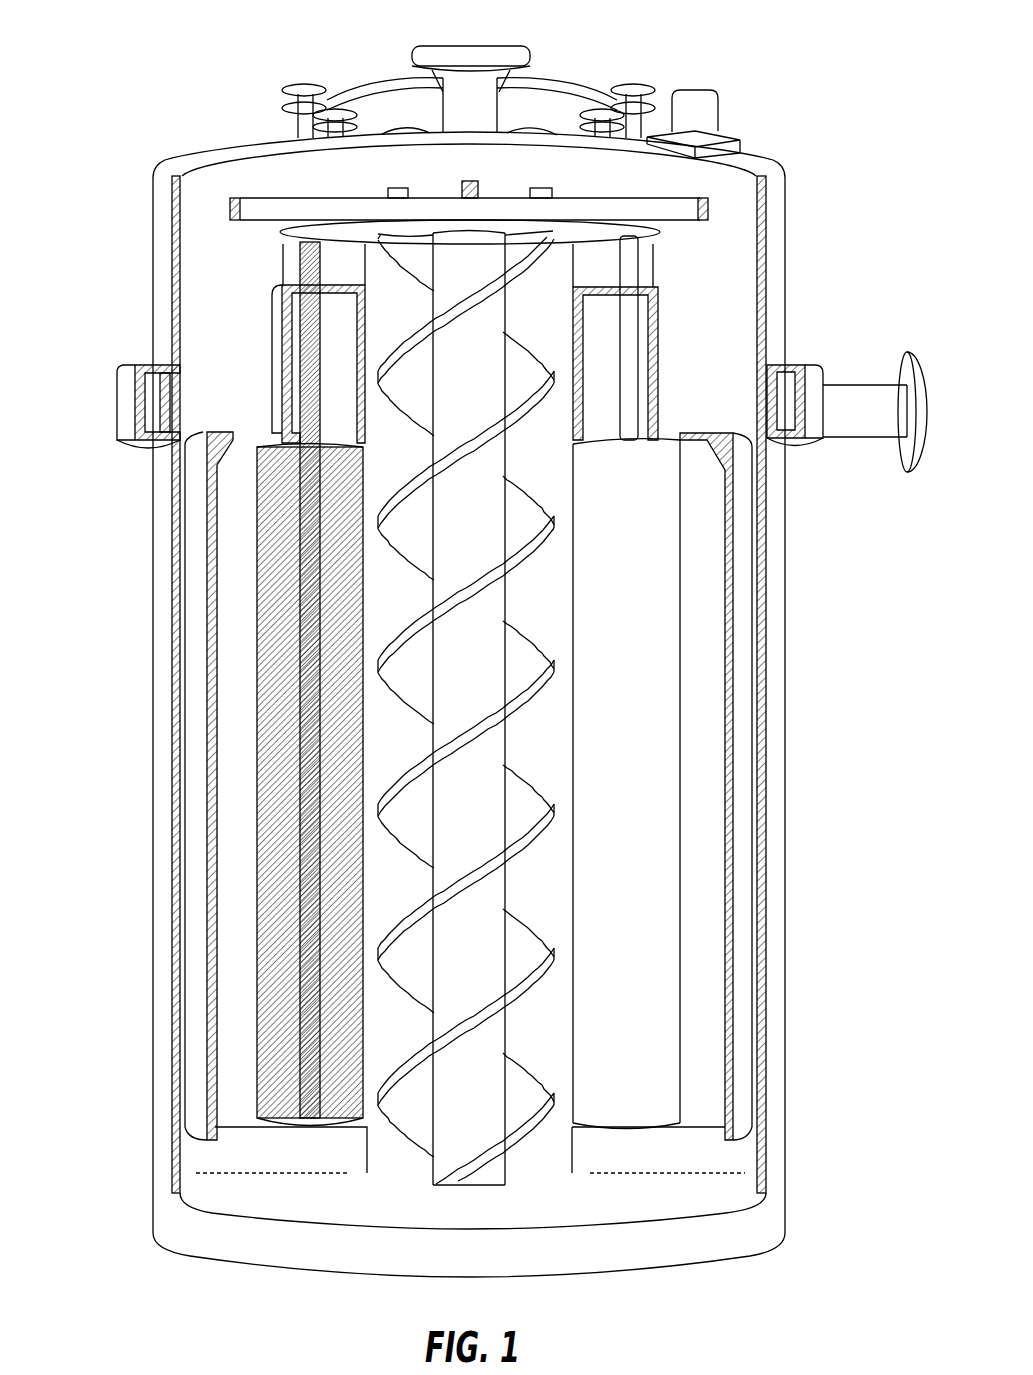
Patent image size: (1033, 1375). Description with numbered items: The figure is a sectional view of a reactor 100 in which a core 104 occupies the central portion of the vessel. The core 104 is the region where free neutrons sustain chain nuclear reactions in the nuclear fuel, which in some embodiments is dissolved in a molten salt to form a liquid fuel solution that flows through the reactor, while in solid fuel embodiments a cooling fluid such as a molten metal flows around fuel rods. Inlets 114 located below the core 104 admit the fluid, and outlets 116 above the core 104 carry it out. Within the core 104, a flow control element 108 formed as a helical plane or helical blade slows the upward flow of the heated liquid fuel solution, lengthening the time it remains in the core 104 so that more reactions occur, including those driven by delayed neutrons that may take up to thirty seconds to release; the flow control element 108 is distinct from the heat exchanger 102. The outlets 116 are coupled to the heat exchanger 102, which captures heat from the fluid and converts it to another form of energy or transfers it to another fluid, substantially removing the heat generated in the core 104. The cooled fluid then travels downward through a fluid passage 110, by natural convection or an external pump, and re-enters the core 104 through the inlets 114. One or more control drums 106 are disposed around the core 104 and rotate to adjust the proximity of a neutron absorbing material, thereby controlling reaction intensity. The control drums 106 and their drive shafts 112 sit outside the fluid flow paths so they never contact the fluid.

The reactor 100 is at (776, 44).
The heat exchanger 102 is at (217, 300).
The core 104 is at (400, 1040).
The control drums 106 is at (275, 768).
The flow control element 108 is at (415, 1092).
The fluid passage 110 is at (180, 540).
The drive shafts 112 is at (305, 368).
The inlets 114 is at (582, 1160).
The outlets 116 is at (592, 268).